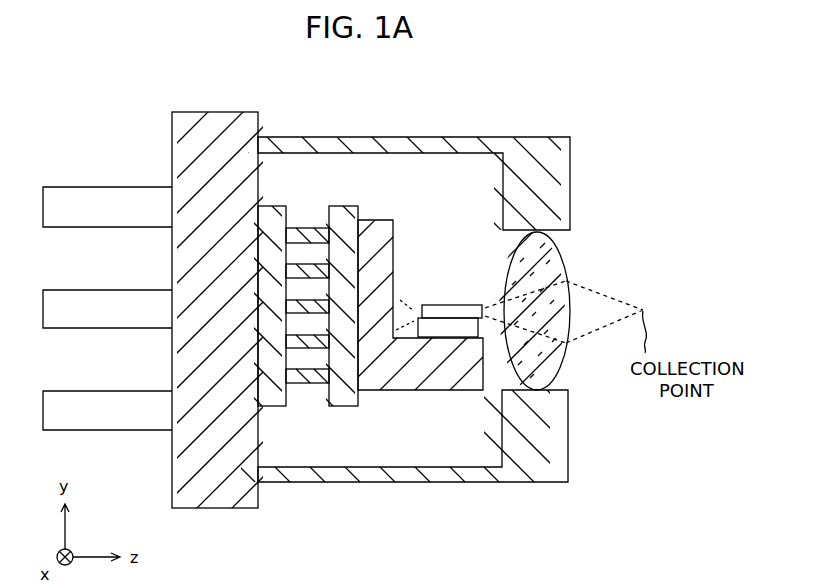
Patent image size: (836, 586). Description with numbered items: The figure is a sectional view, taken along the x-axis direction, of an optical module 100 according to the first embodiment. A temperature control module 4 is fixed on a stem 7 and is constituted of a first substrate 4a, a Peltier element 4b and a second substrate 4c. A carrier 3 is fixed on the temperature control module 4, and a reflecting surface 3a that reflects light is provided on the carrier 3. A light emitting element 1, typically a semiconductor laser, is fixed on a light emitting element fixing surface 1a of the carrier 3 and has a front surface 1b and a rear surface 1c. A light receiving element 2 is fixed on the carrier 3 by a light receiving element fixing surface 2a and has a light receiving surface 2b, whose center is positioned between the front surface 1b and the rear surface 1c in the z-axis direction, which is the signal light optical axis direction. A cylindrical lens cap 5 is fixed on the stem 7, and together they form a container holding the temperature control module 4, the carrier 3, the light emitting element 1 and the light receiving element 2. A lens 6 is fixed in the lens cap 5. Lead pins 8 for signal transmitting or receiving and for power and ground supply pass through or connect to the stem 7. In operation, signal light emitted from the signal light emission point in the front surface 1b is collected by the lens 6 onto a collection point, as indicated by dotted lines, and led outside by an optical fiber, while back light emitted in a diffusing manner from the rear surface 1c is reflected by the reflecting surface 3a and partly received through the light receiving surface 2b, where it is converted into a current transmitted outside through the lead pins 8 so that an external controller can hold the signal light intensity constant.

The optical module 100 is at (187, 73).
The light emitting element 1 is at (466, 305).
The light emitting element fixing surface 1a is at (466, 318).
The front surface 1b is at (485, 305).
The rear surface 1c is at (422, 305).
The light receiving element 2 is at (440, 318).
The light receiving element fixing surface 2a is at (418, 330).
The light receiving surface 2b is at (447, 337).
The carrier 3 is at (418, 293).
The reflecting surface 3a is at (394, 226).
The temperature control module 4 is at (418, 293).
The first substrate 4a is at (277, 208).
The Peltier element 4b is at (329, 204).
The second substrate 4c is at (349, 209).
The cylindrical lens cap 5 is at (545, 137).
The lens 6 is at (572, 372).
The stem 7 is at (193, 502).
The lead pins 8 is at (66, 199).